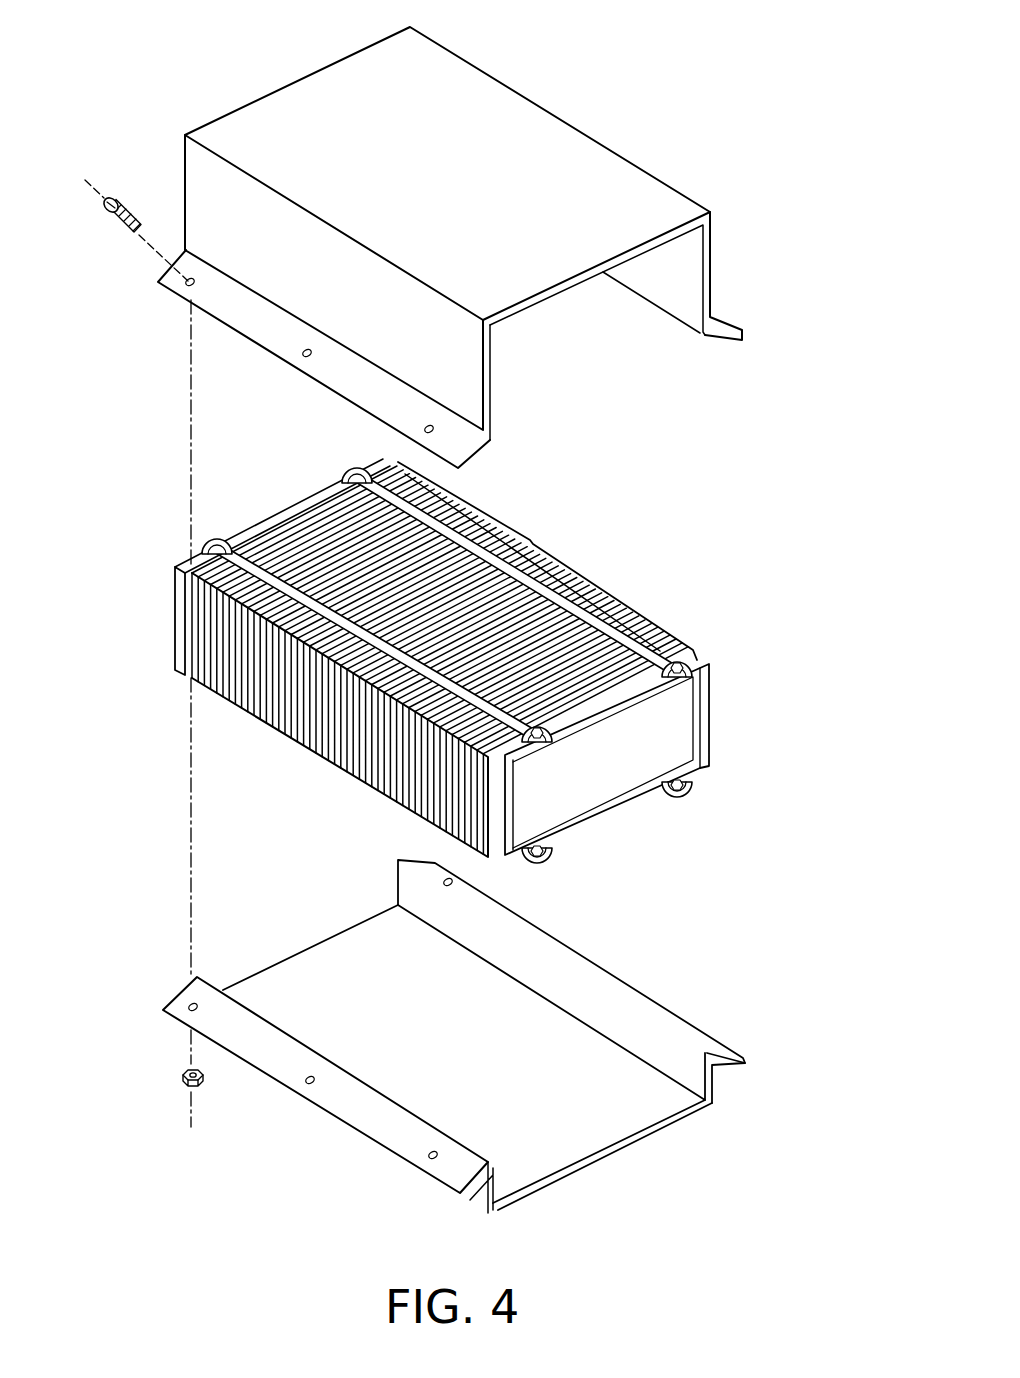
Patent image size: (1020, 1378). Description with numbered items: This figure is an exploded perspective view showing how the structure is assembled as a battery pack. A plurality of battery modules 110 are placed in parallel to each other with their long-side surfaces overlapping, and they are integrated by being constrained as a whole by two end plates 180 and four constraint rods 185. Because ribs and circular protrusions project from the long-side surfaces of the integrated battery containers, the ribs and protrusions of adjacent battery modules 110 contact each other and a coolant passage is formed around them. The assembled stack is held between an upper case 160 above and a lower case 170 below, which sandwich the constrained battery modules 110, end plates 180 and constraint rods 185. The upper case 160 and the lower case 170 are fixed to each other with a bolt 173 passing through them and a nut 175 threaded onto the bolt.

The battery module 110 is at (444, 659).
The upper case 160 is at (322, 107).
The lower case 170 is at (587, 1138).
The bolt 173 is at (110, 199).
The nut 175 is at (183, 1073).
The end plate 180 is at (277, 522).
The constraint rod 185 is at (328, 500).